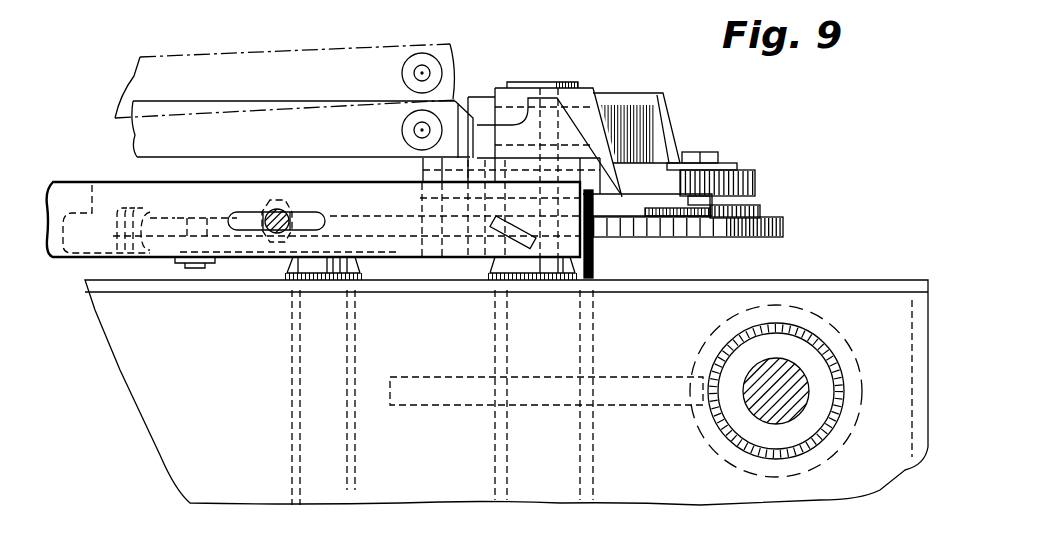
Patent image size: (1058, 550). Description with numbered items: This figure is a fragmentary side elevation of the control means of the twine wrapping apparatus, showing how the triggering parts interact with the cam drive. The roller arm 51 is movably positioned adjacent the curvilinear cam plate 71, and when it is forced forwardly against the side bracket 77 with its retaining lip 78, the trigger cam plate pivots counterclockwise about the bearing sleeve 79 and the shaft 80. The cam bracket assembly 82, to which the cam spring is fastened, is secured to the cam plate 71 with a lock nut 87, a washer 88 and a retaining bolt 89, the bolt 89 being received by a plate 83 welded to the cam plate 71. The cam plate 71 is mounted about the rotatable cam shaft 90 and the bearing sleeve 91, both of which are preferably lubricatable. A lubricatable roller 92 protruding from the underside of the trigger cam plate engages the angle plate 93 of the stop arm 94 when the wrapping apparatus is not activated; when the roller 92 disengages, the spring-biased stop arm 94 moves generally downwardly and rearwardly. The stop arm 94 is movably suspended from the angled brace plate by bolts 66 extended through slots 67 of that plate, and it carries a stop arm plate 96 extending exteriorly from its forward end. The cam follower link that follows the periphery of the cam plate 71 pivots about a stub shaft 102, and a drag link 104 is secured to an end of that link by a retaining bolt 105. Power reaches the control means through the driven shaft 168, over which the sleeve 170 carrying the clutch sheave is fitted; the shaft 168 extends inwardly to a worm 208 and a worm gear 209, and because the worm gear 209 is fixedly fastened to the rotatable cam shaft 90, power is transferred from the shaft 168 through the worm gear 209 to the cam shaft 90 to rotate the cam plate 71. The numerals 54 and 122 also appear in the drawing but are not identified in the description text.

The roller arm 51 is at (133, 142).
The rollers 54 is at (401, 131).
The bolt 66 is at (277, 213).
The slot 67 is at (247, 218).
The curvilinear cam plate 71 is at (750, 238).
The side bracket 77 is at (457, 99).
The retaining lip 78 is at (537, 97).
The bearing sleeve 79 is at (423, 170).
The shaft 80 is at (437, 202).
The cam bracket assembly 82 is at (645, 93).
The plate 83 is at (762, 211).
The lock nut 87 is at (700, 150).
The washer 88 is at (727, 164).
The retaining bolt 89 is at (710, 200).
The rotatable cam shaft 90 is at (597, 93).
The bearing sleeve 91 is at (562, 82).
The lubricatable roller 92 is at (603, 178).
The angle plate 93 is at (575, 217).
The stop arm 94 is at (210, 183).
The stop arm plate 96 is at (594, 252).
The stub shaft 102 is at (300, 386).
The drag link 104 is at (92, 185).
The retaining bolt 105 is at (197, 268).
The base plate 122 is at (840, 280).
The driven shaft 168 is at (808, 388).
The sleeve 170 is at (828, 413).
The worm 208 is at (832, 322).
The worm gear 209 is at (670, 375).